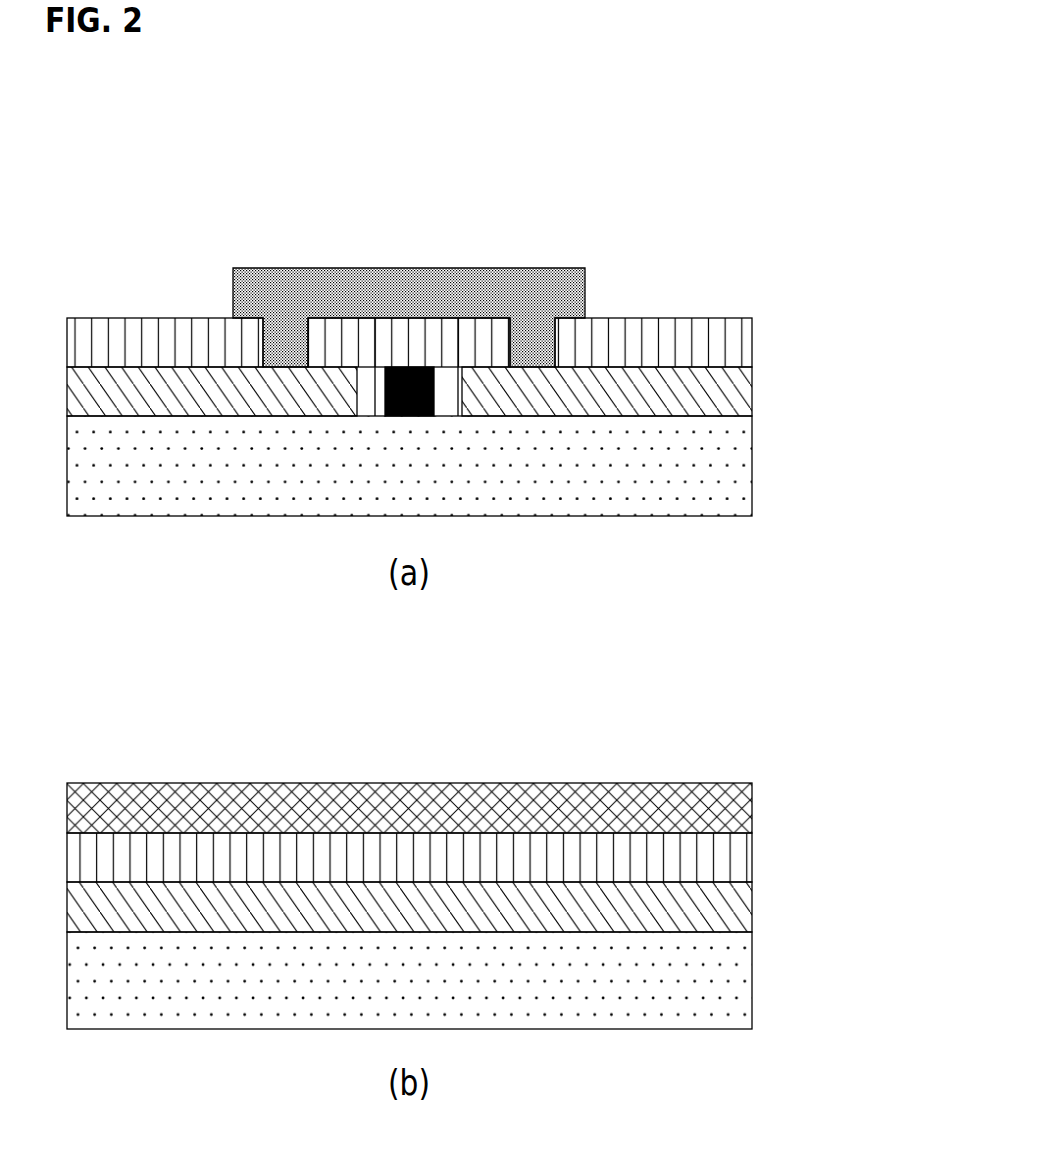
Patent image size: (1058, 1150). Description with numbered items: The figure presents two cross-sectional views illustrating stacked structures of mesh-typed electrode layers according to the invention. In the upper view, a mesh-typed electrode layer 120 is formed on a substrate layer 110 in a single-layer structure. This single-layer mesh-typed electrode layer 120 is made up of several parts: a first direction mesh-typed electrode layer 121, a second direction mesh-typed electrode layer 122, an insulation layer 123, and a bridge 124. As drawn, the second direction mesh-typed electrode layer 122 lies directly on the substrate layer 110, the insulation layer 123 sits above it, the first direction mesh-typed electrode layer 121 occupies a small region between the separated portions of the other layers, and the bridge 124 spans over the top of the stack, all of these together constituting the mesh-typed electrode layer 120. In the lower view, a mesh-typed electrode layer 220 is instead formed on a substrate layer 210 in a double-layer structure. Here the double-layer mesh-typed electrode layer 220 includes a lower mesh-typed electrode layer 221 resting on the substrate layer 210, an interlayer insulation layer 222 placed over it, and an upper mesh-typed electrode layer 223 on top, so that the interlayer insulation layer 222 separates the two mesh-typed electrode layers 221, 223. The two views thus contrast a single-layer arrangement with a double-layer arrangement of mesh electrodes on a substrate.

The substrate layer 110 is at (753, 463).
The mesh-typed electrode layer 120 is at (409, 233).
The first direction mesh-typed electrode layer 121 is at (409, 273).
The second direction mesh-typed electrode layer 122 is at (152, 393).
The insulation layer 123 is at (633, 338).
The bridge 124 is at (478, 290).
The substrate layer 210 is at (753, 978).
The mesh-typed electrode layer 220 is at (513, 857).
The lower mesh-typed electrode layer 221 is at (753, 905).
The interlayer insulation layer 222 is at (753, 857).
The upper mesh-typed electrode layer 223 is at (753, 805).